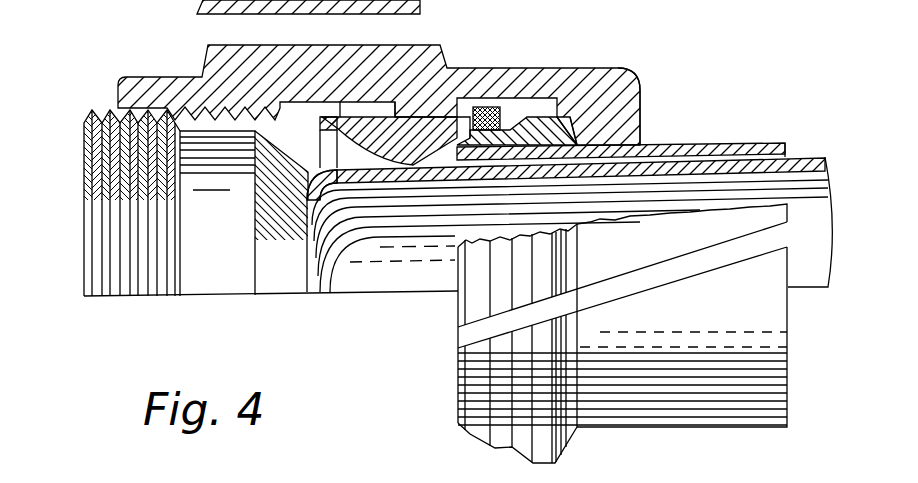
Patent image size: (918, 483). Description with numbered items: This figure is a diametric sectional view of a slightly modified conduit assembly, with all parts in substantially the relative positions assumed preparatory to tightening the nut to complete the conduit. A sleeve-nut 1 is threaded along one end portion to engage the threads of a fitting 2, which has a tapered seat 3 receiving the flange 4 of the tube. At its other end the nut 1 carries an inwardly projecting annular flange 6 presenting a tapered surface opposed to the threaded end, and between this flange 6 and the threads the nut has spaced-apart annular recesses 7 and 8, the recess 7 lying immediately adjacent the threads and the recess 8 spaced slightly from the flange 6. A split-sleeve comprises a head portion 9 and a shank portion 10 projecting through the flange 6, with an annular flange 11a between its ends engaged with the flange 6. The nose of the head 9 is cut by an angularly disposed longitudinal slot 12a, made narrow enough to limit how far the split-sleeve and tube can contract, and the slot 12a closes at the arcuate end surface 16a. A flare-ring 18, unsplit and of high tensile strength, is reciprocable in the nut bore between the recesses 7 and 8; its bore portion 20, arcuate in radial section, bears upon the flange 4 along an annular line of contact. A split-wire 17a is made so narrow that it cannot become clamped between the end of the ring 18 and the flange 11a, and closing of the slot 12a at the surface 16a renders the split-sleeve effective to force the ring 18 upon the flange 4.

The sleeve-nut 1 is at (207, 63).
The fitting 2 is at (207, 282).
The tapered seat 3 is at (255, 195).
The flange 4 is at (303, 182).
The annular flange 6 is at (638, 112).
The annular recess 7 is at (365, 107).
The annular recess 8 is at (467, 105).
The head portion 9 is at (507, 130).
The shank portion 10 is at (745, 131).
The flange of the split-sleeve 11a is at (575, 125).
The slot 12a is at (685, 270).
The arcuate extremity surface 16a is at (460, 165).
The split-wire 17a is at (482, 107).
The flare-ring 18 is at (412, 133).
The bore portion 20 is at (380, 162).